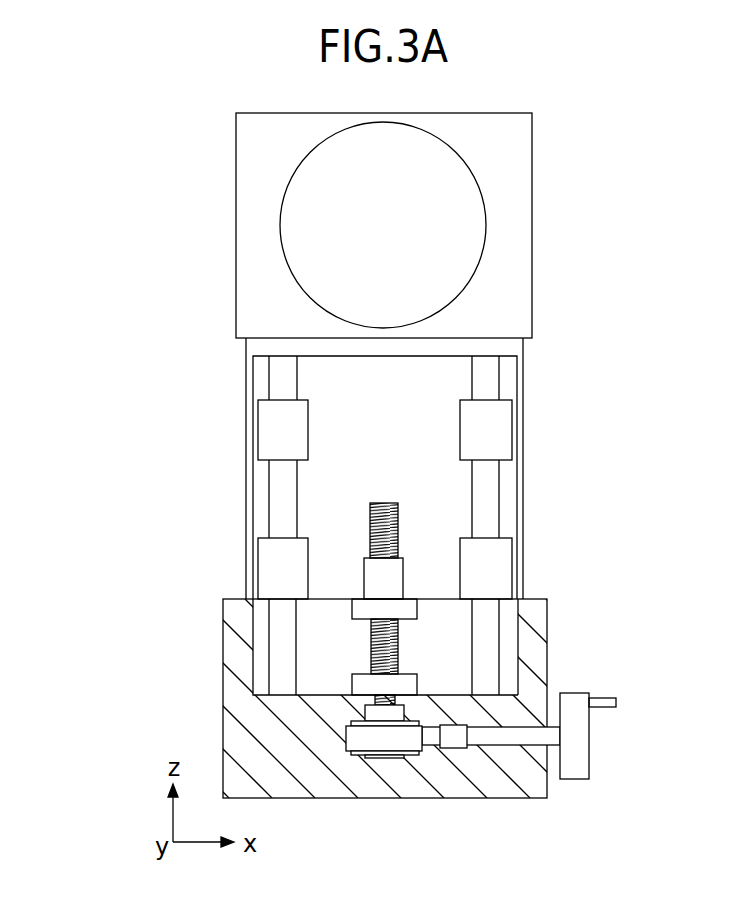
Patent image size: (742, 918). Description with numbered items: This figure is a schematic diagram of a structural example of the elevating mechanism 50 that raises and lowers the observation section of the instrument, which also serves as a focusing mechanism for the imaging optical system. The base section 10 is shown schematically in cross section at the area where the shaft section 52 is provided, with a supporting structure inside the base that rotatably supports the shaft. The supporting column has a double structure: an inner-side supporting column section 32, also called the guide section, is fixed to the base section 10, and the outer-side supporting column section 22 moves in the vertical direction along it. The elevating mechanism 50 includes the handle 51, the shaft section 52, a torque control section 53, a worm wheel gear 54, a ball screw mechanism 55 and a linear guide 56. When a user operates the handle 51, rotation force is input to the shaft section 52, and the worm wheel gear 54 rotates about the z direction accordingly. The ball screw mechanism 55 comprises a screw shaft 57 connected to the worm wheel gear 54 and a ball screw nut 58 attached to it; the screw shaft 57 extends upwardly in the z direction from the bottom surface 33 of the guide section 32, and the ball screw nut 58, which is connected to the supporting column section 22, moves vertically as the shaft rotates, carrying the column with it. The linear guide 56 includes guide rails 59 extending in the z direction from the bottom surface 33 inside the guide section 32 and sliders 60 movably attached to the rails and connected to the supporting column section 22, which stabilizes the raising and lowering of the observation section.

The base section 10 is at (392, 775).
The supporting column section 22 is at (525, 382).
The inner-side supporting column section (guide section) 32 is at (519, 648).
The bottom surface 33 is at (448, 694).
The elevating mechanism 50 is at (572, 620).
The handle 51 is at (579, 733).
The shaft section 52 is at (510, 742).
The torque control section 53 is at (454, 742).
The worm wheel gear 54 is at (362, 742).
The ball screw mechanism 55 is at (342, 609).
The linear guide 56 is at (508, 497).
The screw shaft 57 is at (370, 652).
The ball screw nut 58 is at (371, 620).
The guide rails 59 is at (269, 497).
The sliders 60 is at (268, 432).